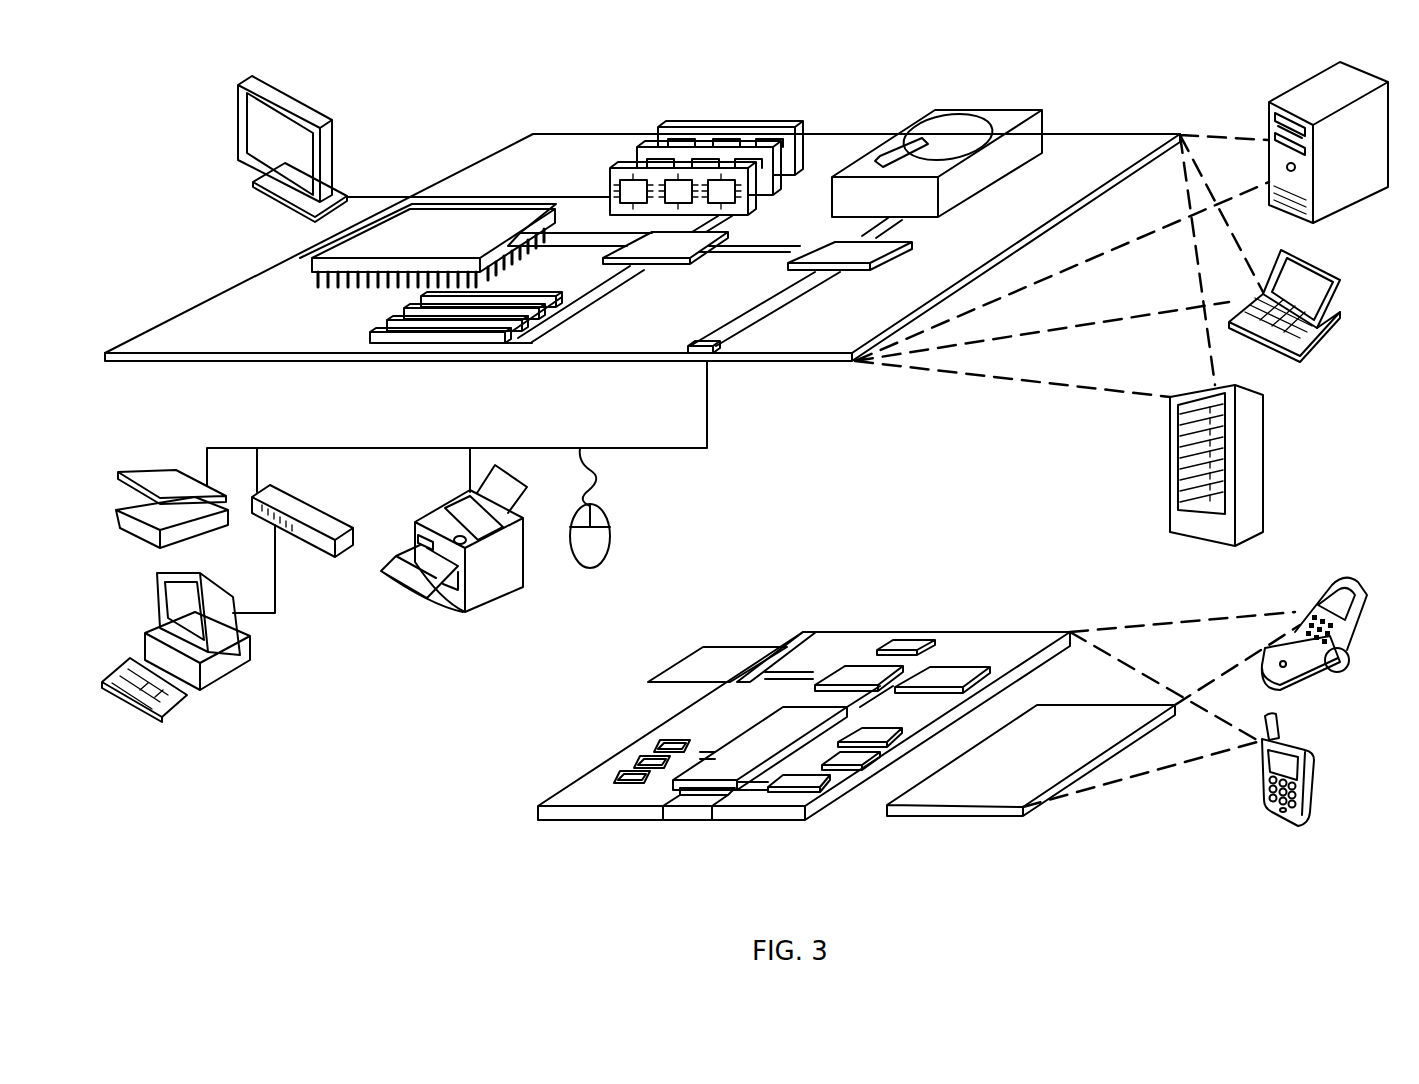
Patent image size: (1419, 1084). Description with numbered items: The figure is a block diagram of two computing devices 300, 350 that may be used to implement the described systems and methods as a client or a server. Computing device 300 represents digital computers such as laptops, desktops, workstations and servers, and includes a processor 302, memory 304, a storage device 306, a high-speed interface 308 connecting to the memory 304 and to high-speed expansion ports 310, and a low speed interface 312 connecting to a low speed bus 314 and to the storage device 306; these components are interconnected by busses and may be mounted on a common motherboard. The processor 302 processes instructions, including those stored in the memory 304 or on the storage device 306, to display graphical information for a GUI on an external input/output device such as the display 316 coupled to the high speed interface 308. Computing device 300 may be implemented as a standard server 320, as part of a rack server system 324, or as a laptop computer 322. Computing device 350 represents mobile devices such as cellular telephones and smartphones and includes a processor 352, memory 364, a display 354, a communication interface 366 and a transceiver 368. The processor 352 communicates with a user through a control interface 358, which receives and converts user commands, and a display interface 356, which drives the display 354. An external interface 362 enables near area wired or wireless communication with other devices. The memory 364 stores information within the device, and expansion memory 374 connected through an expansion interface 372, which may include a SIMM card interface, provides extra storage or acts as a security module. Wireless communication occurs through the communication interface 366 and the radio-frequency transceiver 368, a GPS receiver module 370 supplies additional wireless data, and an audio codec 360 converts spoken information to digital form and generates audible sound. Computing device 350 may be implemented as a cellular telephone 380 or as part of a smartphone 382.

The computing device 300 is at (448, 98).
The processor 302 is at (320, 265).
The memory 304 is at (668, 126).
The storage device 306 is at (936, 112).
The high-speed interface 308 is at (645, 248).
The high-speed expansion ports 310 is at (392, 325).
The low speed interface 312 is at (830, 243).
The low speed bus 314 is at (708, 357).
The display 316 is at (237, 82).
The standard server 320 is at (1268, 114).
The laptop computer 322 is at (1338, 286).
The rack server system 324 is at (1172, 490).
The computing device 350 is at (512, 822).
The processor 352 is at (735, 774).
The display 354 is at (995, 796).
The display interface 356 is at (805, 790).
The control interface 358 is at (853, 770).
The audio codec 360 is at (872, 750).
The external interface 362 is at (690, 808).
The memory 364 is at (648, 766).
The communication interface 366 is at (855, 676).
The transceiver 368 is at (945, 676).
The GPS receiver module 370 is at (915, 645).
The expansion interface 372 is at (790, 648).
The expansion memory 374 is at (695, 664).
The cellular telephone 380 is at (1325, 589).
The smartphone 382 is at (1262, 776).